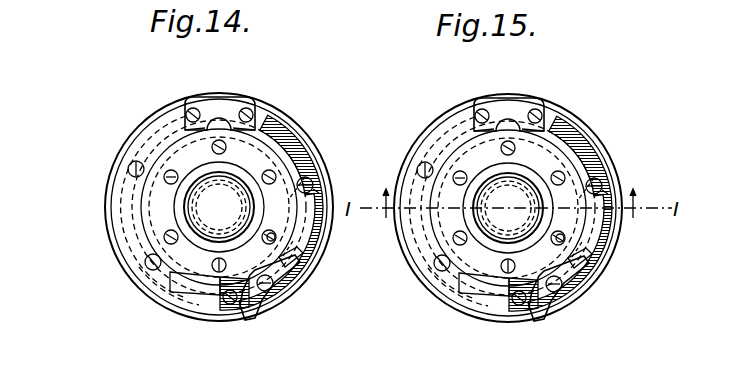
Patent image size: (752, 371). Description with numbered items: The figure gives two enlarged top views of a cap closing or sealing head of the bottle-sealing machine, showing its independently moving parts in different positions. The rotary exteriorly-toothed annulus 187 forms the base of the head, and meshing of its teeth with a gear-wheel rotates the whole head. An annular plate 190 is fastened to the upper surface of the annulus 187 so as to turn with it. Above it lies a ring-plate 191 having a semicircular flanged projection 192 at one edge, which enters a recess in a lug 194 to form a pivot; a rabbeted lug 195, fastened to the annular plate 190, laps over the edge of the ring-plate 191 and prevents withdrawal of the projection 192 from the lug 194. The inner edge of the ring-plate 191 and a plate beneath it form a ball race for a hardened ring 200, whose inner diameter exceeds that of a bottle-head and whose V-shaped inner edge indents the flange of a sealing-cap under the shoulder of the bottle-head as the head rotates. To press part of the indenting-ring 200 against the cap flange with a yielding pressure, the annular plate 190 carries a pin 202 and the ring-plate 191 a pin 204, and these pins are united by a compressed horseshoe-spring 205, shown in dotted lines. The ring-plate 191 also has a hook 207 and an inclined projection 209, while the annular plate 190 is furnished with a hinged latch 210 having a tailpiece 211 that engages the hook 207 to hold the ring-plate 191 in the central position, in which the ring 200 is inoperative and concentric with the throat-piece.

In FIG. 14, the rotary exteriorly-toothed annulus 187 is at (306, 156).
In FIG. 15, the rotary exteriorly-toothed annulus 187 is at (432, 290).
In FIG. 14, the annular plate 190 is at (120, 244).
In FIG. 15, the annular plate 190 is at (421, 255).
In FIG. 14, the ring-plate 191 is at (295, 141).
In FIG. 15, the ring-plate 191 is at (596, 136).
In FIG. 14, the semicircular flanged projection 192 is at (248, 96).
In FIG. 15, the semicircular flanged projection 192 is at (541, 98).
In FIG. 14, the lug 194 is at (207, 100).
In FIG. 15, the lug 194 is at (495, 101).
In FIG. 14, the rabbeted lug 195 is at (162, 300).
In FIG. 15, the rabbeted lug 195 is at (466, 304).
In FIG. 14, the hardened ring 200 is at (112, 178).
In FIG. 15, the hardened ring 200 is at (612, 150).
In FIG. 14, the pin 202 is at (150, 290).
In FIG. 15, the pin 202 is at (442, 316).
In FIG. 14, the pin 204 is at (320, 190).
In FIG. 15, the pin 204 is at (628, 250).
In FIG. 14, the horseshoe-spring 205 is at (118, 222).
In FIG. 15, the horseshoe-spring 205 is at (626, 180).
In FIG. 14, the hook 207 is at (300, 268).
In FIG. 15, the hook 207 is at (601, 270).
In FIG. 14, the inclined projection 209 is at (312, 230).
In FIG. 15, the inclined projection 209 is at (606, 240).
In FIG. 14, the hinged latch 210 is at (292, 308).
In FIG. 15, the hinged latch 210 is at (590, 296).
In FIG. 14, the tailpiece 211 is at (251, 316).
In FIG. 15, the tailpiece 211 is at (522, 318).